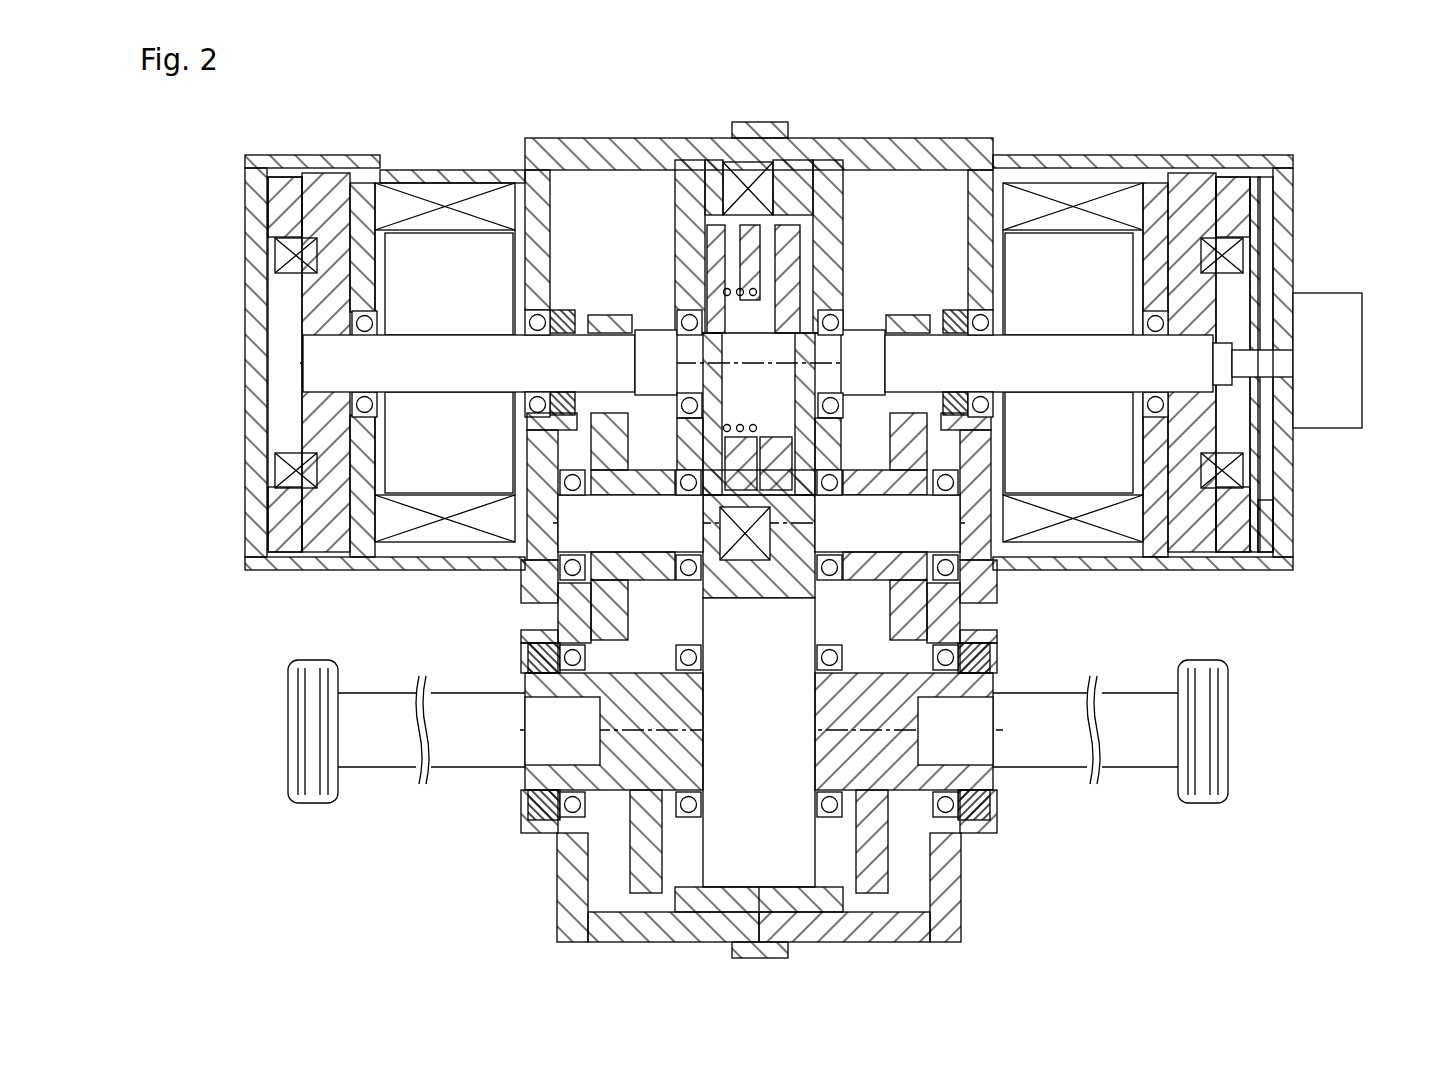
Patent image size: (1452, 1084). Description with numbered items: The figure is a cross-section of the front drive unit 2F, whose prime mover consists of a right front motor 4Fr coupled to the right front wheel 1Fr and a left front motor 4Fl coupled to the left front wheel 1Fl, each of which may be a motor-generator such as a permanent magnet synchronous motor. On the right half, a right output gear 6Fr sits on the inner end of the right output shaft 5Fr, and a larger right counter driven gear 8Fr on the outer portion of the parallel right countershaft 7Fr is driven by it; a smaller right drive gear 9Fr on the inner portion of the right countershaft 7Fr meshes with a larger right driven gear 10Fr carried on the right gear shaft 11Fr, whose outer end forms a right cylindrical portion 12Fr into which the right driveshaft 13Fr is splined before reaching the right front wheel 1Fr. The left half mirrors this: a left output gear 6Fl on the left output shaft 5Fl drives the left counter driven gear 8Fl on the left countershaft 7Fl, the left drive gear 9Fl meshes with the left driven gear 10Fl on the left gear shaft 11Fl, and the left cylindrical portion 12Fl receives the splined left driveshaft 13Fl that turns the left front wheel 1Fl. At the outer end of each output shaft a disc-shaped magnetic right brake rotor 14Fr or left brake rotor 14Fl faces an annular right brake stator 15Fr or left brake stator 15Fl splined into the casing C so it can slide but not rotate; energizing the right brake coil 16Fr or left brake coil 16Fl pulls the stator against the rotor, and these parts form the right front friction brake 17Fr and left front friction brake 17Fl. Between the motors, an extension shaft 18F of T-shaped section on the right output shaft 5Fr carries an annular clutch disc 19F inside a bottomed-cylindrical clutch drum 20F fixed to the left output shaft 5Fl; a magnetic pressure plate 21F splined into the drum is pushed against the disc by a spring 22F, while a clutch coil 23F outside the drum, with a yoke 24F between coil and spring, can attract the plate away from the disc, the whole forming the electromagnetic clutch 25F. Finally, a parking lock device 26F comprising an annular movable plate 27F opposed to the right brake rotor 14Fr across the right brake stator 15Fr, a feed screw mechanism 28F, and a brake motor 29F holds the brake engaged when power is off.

The left front wheel 1Fl is at (314, 667).
The right front wheel 1Fr is at (1203, 667).
The front drive unit 2F is at (396, 889).
The left front motor 4Fl is at (446, 138).
The right front motor 4Fr is at (1082, 146).
The left output shaft 5Fl is at (450, 350).
The right output shaft 5Fr is at (1063, 347).
The left output gear 6Fl is at (600, 320).
The right output gear 6Fr is at (915, 322).
The left countershaft 7Fl is at (540, 560).
The right countershaft 7Fr is at (950, 575).
The left counter driven gear 8Fl is at (597, 606).
The right counter driven gear 8Fr is at (912, 615).
The left drive gear 9Fl is at (625, 462).
The right drive gear 9Fr is at (888, 442).
The left driven gear 10Fl is at (636, 878).
The right driven gear 10Fr is at (877, 870).
The left gear shaft 11Fl is at (618, 773).
The right gear shaft 11Fr is at (885, 766).
The left cylindrical portion 12Fl is at (531, 780).
The right cylindrical portion 12Fr is at (978, 780).
The left driveshaft 13Fl is at (471, 700).
The right driveshaft 13Fr is at (1053, 697).
The left brake rotor 14Fl is at (328, 190).
The right brake rotor 14Fr is at (1190, 180).
The left brake stator 15Fl is at (290, 185).
The right brake stator 15Fr is at (1233, 188).
The left brake coil 16Fl is at (278, 257).
The right brake coil 16Fr is at (1240, 250).
The left front friction brake 17Fl is at (259, 323).
The right front friction brake 17Fr is at (1298, 144).
The extension shaft 18F is at (840, 310).
The clutch disc 19F is at (789, 266).
The clutch drum 20F is at (712, 240).
The pressure plate 21F is at (755, 278).
The spring 22F is at (668, 350).
The clutch coil 23F is at (716, 170).
The yoke 24F is at (752, 225).
The electromagnetic clutch 25F is at (875, 192).
The parking lock device 26F is at (1312, 467).
The movable plate 27F is at (1262, 531).
The feed screw mechanism 28F is at (1256, 321).
The brake motor 29F is at (1362, 331).
The casing C is at (882, 150).